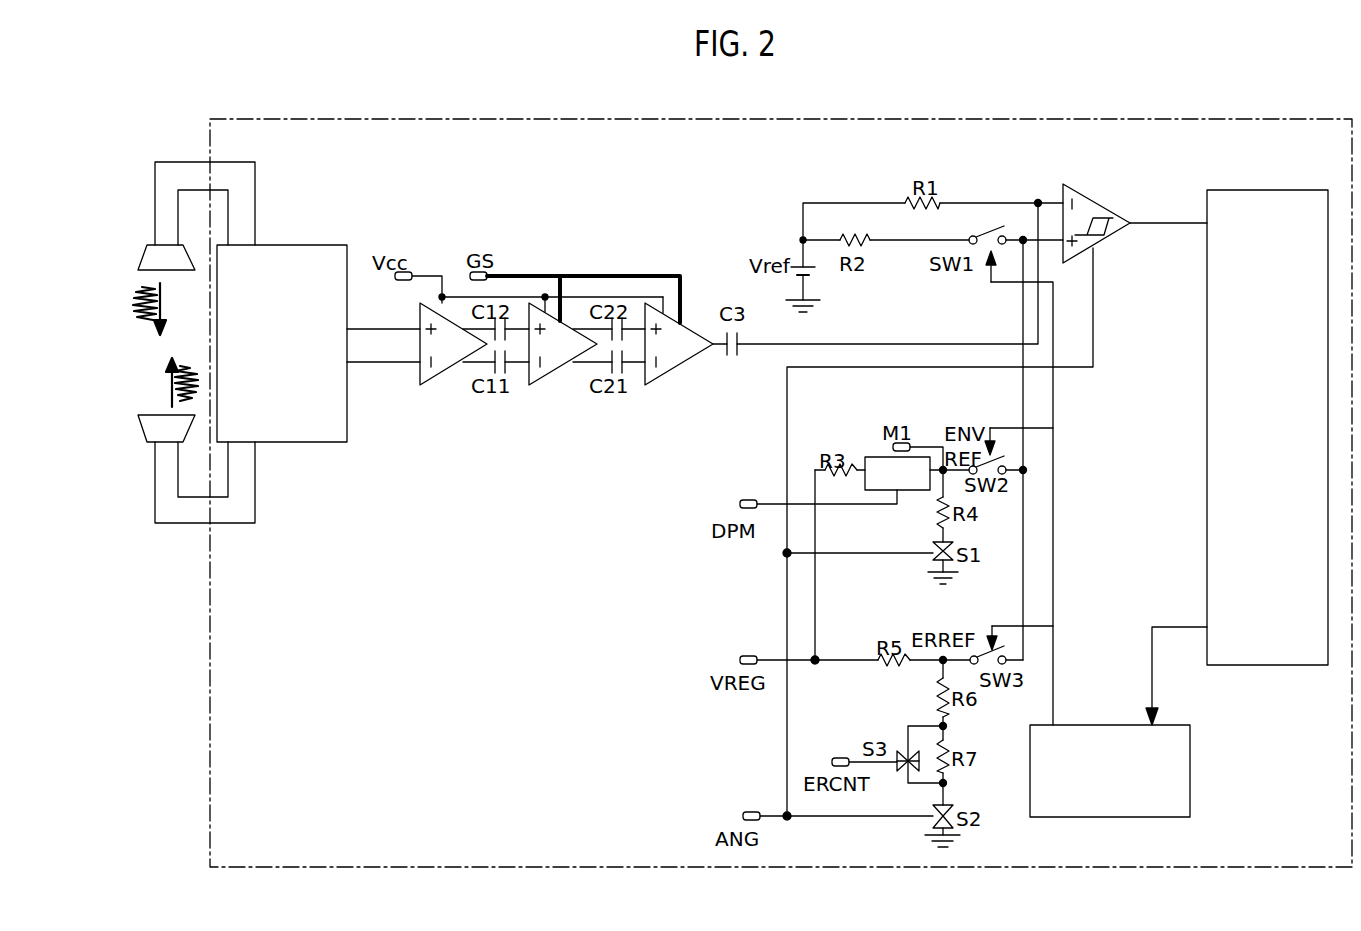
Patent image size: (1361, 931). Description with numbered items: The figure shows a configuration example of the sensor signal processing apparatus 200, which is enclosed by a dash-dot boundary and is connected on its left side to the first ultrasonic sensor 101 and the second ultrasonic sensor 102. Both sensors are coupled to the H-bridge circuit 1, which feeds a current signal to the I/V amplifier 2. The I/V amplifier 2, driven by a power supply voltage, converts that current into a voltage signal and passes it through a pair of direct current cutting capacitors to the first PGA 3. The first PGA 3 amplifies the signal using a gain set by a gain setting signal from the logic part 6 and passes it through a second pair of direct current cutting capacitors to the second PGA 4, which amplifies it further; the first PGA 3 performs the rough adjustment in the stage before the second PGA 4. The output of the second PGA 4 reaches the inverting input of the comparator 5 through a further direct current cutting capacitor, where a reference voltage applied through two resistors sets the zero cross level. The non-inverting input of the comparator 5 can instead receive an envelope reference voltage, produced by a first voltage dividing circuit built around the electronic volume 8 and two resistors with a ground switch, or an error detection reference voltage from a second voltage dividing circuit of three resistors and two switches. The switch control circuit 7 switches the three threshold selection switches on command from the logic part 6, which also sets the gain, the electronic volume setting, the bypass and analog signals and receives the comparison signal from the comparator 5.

The H-bridge circuit 1 is at (337, 244).
The I/V amplifier 2 is at (452, 374).
The first PGA 3 is at (565, 374).
The second PGA 4 is at (672, 374).
The comparator 5 is at (1094, 198).
The logic part 6 is at (1314, 190).
The switch control circuit 7 is at (1186, 725).
The electronic volume 8 is at (866, 457).
The first ultrasonic sensor 101 is at (143, 250).
The second ultrasonic sensor 102 is at (143, 433).
The sensor signal processing apparatus 200 is at (1308, 119).